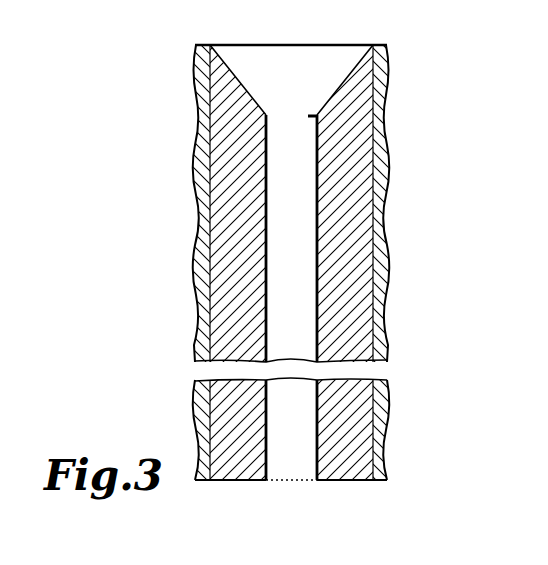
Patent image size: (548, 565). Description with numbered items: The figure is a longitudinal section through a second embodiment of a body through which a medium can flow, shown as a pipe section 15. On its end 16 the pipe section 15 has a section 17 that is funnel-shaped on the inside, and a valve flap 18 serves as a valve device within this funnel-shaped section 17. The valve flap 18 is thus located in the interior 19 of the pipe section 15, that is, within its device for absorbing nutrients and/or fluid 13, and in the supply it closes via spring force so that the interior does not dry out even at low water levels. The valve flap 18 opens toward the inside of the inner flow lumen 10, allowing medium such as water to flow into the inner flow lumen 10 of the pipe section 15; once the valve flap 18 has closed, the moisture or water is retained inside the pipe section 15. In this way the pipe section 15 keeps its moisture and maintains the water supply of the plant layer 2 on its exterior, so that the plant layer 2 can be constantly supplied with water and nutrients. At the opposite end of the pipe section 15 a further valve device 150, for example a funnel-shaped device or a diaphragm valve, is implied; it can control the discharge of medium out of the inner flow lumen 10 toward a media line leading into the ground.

The plant layer 2 is at (195, 304).
The inner flow lumen 10 is at (322, 316).
The device for absorbing nutrients and/or fluid 13 is at (232, 348).
The pipe section 15 is at (204, 234).
The end 16 is at (397, 42).
The funnel-shaped section 17 is at (407, 47).
The valve flap 18 is at (308, 135).
The interior 19 is at (317, 240).
The valve device 150 is at (302, 478).